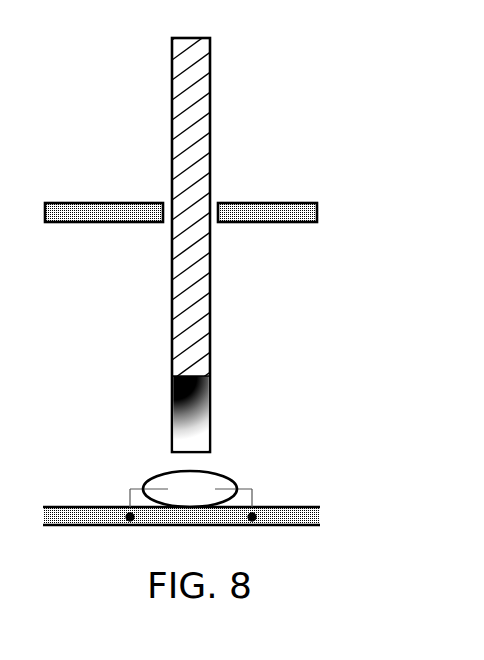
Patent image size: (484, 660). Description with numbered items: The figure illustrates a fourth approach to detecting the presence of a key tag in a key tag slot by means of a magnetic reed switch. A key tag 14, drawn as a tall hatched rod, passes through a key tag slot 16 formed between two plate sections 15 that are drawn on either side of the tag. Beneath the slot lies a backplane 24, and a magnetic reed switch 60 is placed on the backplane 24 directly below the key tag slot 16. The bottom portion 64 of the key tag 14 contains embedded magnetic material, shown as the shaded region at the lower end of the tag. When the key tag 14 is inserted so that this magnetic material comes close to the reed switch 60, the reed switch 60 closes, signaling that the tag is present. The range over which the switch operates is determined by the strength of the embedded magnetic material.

The key tag 14 is at (210, 118).
The plate 15 is at (277, 202).
The key tag slot 16 is at (213, 207).
The bottom portion 64 is at (212, 412).
The magnetic reed switch 60 is at (218, 470).
The backplane 24 is at (277, 507).